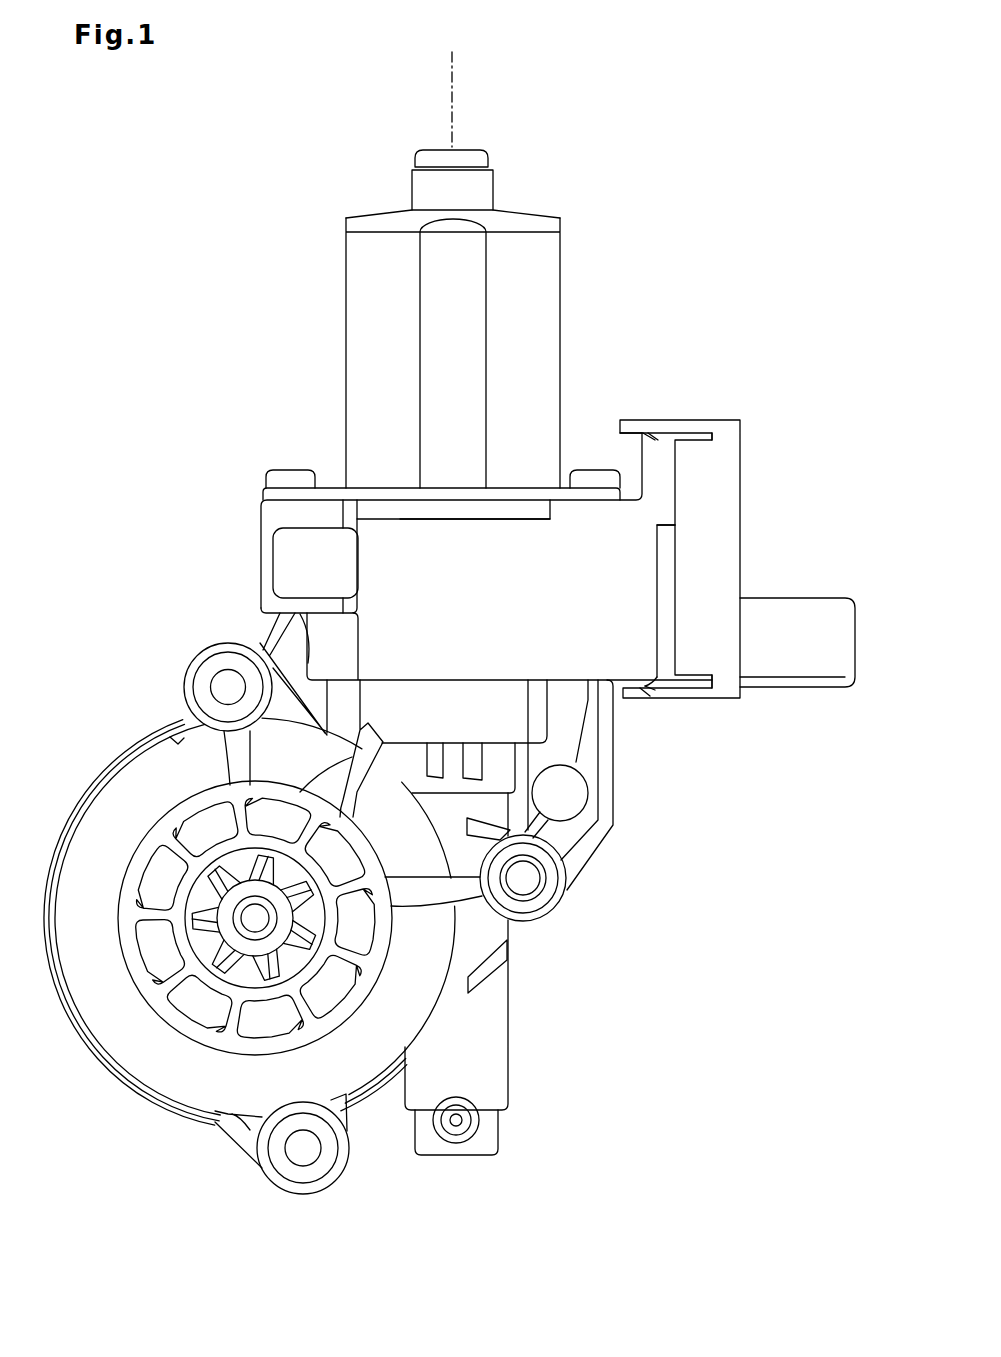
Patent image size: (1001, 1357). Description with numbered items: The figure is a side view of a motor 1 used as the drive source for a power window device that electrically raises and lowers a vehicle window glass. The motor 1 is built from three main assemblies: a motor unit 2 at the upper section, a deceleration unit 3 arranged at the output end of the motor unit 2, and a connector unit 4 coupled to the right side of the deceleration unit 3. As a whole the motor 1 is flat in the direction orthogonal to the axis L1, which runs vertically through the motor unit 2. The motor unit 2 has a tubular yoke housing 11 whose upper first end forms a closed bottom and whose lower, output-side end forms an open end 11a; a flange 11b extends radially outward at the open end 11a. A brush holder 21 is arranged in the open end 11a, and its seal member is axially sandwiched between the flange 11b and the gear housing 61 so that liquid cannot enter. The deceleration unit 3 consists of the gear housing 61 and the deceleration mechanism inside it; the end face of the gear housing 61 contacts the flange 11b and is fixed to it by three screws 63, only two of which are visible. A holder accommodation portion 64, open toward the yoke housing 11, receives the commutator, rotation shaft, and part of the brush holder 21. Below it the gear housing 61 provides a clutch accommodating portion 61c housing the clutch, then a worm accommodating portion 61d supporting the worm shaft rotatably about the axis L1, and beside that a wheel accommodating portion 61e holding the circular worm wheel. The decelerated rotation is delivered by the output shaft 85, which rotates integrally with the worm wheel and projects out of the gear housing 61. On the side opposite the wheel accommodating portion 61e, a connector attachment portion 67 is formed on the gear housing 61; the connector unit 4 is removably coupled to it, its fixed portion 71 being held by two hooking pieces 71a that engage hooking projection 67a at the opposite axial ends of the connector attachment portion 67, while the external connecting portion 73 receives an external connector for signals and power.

The motor 1 is at (660, 189).
The axis L1 is at (454, 70).
The motor unit 2 is at (357, 207).
The yoke housing 11 is at (545, 283).
The open end 11a is at (374, 503).
The flange 11b is at (524, 490).
The brush holder 21 is at (452, 512).
The screws 63 is at (286, 468).
The deceleration unit 3 is at (253, 560).
The gear housing 61 is at (260, 520).
The holder accommodation portion 64 is at (378, 575).
The clutch accommodating portion 61c is at (528, 717).
The worm accommodating portion 61d is at (510, 1013).
The wheel accommodating portion 61e is at (128, 747).
The output shaft 85 is at (227, 908).
The connector unit 4 is at (742, 458).
The fixed portion 71 is at (736, 506).
The hooking pieces 71a is at (693, 418).
The connector attachment portion 67 is at (660, 582).
The hooking projection 67a is at (652, 432).
The external connecting portion 73 is at (797, 597).